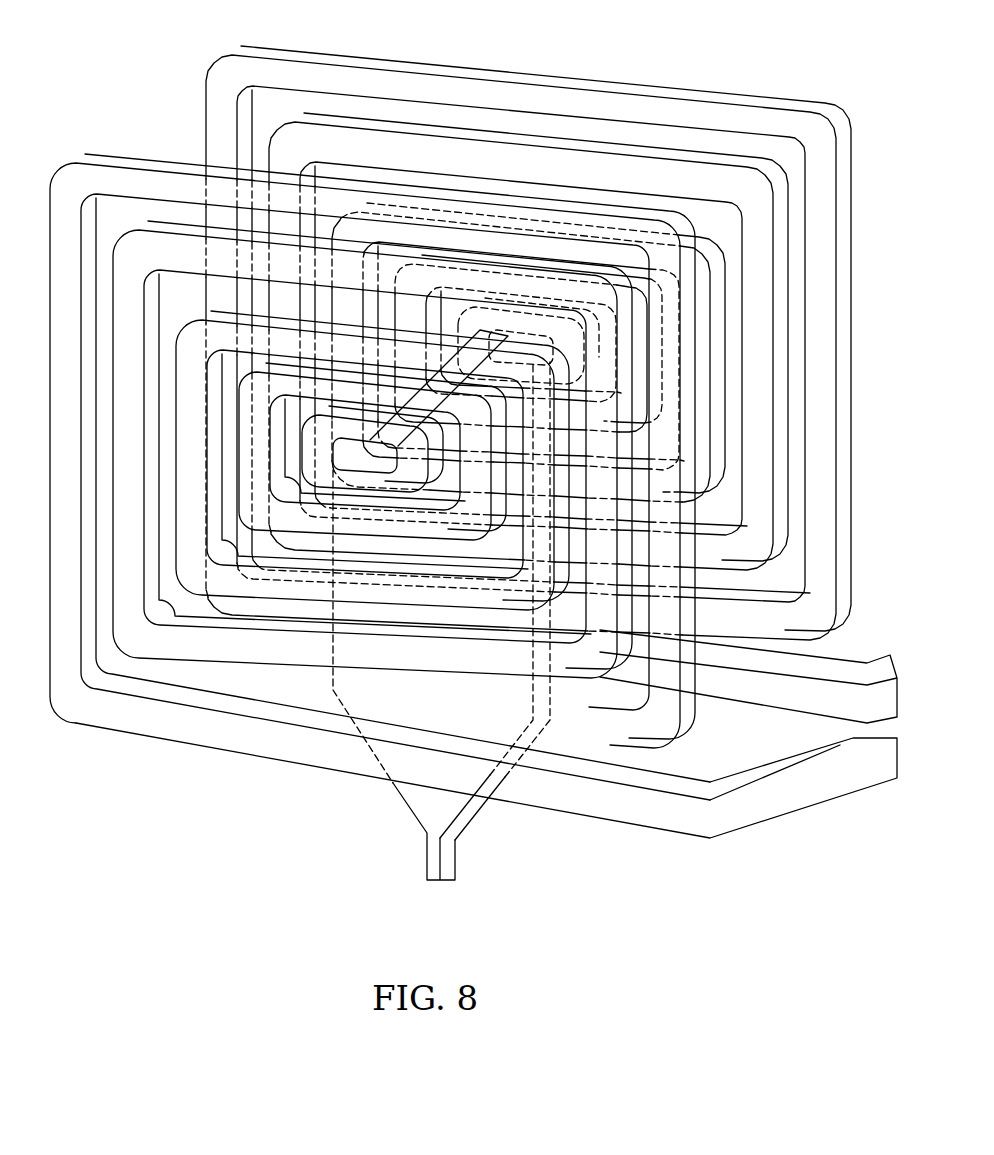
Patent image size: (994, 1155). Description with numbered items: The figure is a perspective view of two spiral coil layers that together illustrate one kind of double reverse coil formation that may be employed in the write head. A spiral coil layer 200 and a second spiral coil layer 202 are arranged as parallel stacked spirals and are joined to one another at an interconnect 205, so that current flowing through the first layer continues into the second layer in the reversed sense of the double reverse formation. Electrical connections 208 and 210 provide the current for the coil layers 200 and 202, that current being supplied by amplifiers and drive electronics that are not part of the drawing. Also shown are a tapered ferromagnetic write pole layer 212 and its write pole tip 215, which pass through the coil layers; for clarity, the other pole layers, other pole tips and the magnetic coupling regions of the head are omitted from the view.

The spiral coil layer 200 is at (148, 160).
The spiral coil layer 202 is at (230, 52).
The interconnect 205 is at (439, 388).
The electrical connection 208 is at (780, 806).
The electrical connection 210 is at (884, 652).
The tapered ferromagnetic write pole layer 212 is at (470, 822).
The write pole tip 215 is at (432, 882).